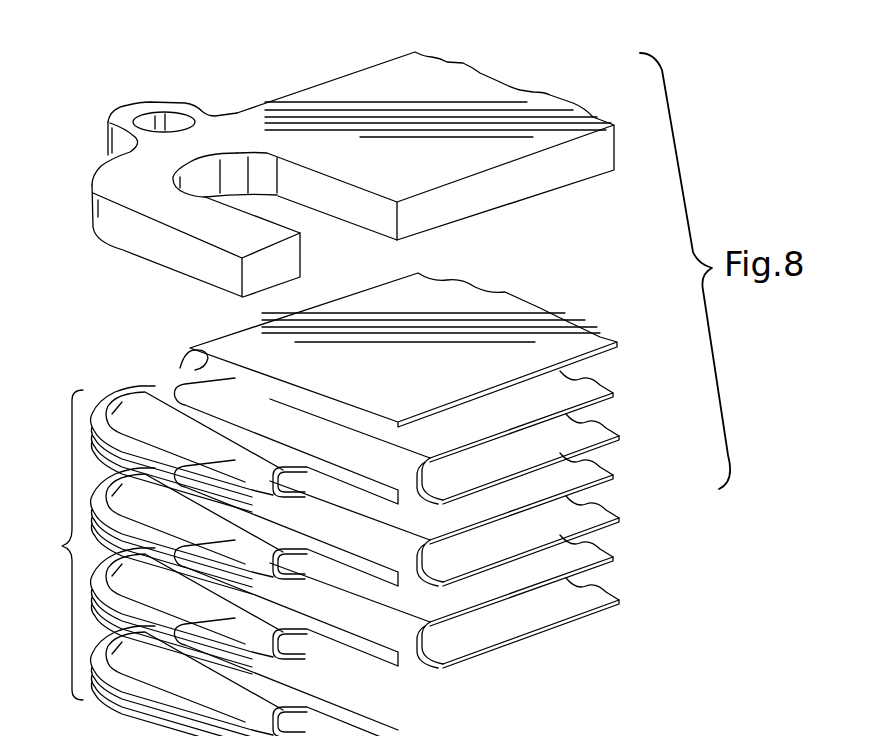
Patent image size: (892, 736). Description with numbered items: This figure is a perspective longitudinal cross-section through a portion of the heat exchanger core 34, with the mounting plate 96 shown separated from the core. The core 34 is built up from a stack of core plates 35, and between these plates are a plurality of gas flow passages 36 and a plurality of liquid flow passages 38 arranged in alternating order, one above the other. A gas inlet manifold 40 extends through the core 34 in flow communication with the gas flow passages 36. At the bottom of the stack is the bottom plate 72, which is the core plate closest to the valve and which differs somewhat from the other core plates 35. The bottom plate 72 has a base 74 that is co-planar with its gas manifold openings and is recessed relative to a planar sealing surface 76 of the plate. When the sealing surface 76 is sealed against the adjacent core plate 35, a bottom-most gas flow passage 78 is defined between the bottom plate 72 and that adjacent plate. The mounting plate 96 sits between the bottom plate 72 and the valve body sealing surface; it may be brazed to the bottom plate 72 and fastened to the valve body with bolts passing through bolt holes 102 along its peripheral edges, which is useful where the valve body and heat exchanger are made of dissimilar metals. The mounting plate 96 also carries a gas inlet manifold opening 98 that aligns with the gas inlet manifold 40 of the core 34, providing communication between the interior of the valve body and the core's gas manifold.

The heat exchanger core 34 is at (227, 522).
The core plates 35 is at (620, 605).
The gas flow passages 36 is at (517, 424).
The liquid flow passages 38 is at (509, 479).
The gas inlet manifold 40 is at (340, 662).
The bottom plate 72 is at (403, 338).
The base 74 is at (405, 387).
The planar sealing surface 76 is at (195, 455).
The bottom-most gas flow passage 78 is at (433, 437).
The mounting plate 96 is at (518, 93).
The gas inlet manifold opening 98 is at (258, 180).
The bolt holes 102 is at (165, 126).